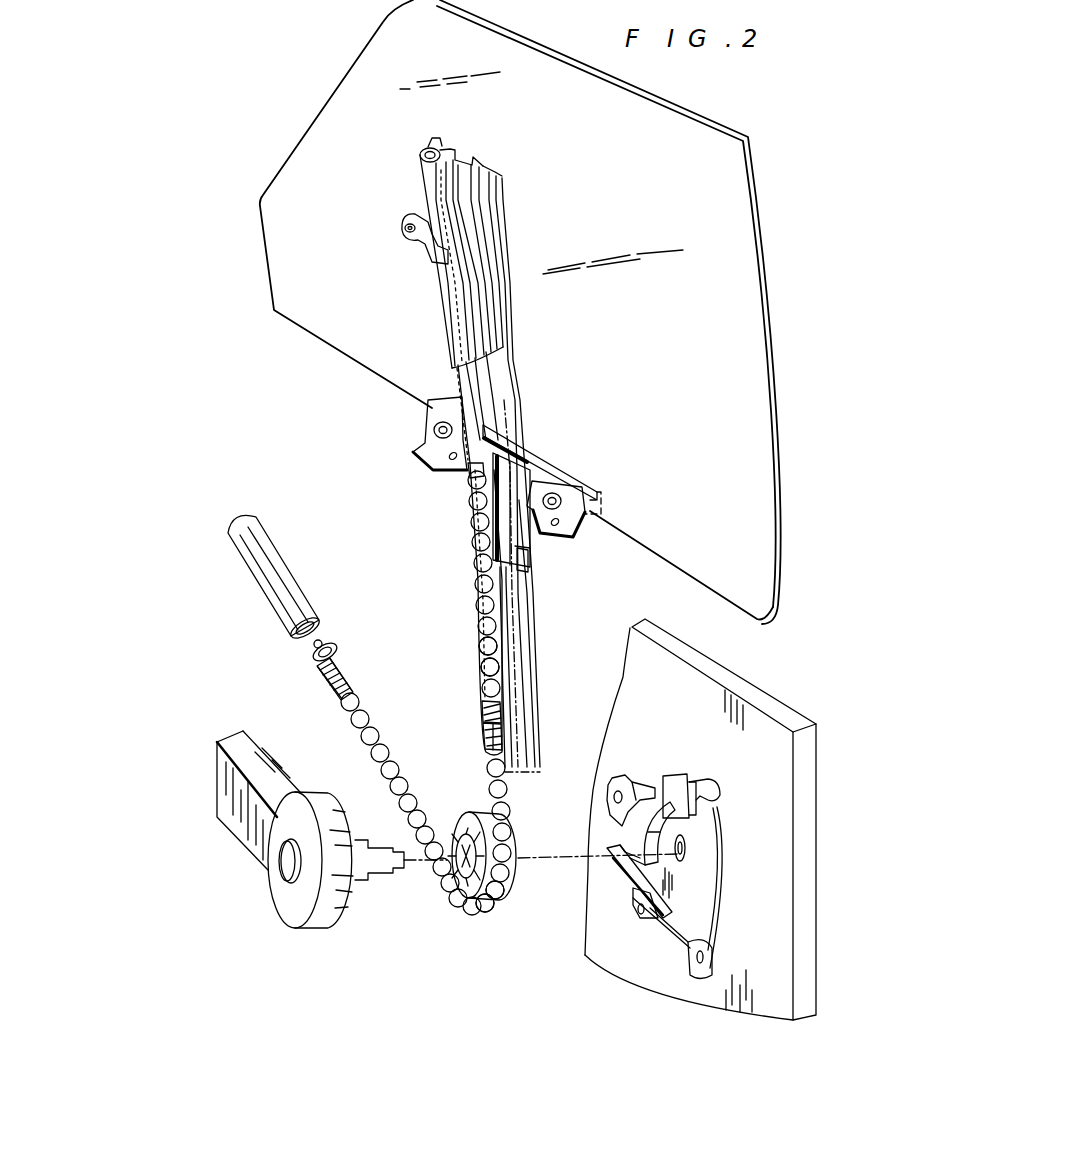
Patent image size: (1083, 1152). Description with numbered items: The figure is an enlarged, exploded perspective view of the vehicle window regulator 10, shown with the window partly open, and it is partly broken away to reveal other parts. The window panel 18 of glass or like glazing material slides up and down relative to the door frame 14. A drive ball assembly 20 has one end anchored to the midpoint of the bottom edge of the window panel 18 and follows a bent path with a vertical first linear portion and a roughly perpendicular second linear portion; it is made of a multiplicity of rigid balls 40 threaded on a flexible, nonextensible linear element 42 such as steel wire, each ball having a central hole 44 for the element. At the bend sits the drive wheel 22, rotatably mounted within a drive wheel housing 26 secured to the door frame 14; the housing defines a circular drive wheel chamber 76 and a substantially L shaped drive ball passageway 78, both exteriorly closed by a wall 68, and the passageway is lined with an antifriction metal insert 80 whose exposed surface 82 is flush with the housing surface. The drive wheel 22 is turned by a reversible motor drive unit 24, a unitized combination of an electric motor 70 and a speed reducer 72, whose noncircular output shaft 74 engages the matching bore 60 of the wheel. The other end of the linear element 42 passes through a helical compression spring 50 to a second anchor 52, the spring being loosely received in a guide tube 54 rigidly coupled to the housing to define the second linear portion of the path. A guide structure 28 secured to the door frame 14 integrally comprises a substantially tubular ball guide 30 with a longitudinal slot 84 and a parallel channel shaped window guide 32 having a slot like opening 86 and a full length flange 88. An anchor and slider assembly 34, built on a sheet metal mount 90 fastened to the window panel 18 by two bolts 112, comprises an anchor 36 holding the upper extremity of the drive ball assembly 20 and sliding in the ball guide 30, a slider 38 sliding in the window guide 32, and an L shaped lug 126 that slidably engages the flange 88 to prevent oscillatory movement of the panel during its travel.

The window regulator 10 is at (286, 406).
The door frame 14 is at (775, 740).
The window panel 18 is at (772, 462).
The drive ball assembly 20 is at (476, 619).
The drive wheel 22 is at (514, 834).
The motor drive unit 24 is at (222, 741).
The drive wheel housing 26 is at (696, 778).
The guide structure 28 is at (421, 148).
The ball guide 30 is at (438, 192).
The window guide 32 is at (485, 200).
The anchor and slider assembly 34 is at (548, 460).
The anchor 36 is at (467, 480).
The slider 38 is at (503, 488).
The balls 40 is at (484, 690).
The linear element 42 is at (484, 708).
The hole 44 is at (486, 735).
The compression spring 50 is at (350, 676).
The anchor 52 is at (333, 648).
The guide tube 54 is at (266, 548).
The bore 60 is at (455, 882).
The wall 68 is at (693, 875).
The electric motor 70 is at (228, 817).
The speed reducer 72 is at (283, 912).
The output shaft 74 is at (378, 873).
The drive wheel chamber 76 is at (668, 812).
The drive ball passageway 78 is at (690, 942).
The metal insert 80 is at (655, 925).
The exposed surface 82 is at (645, 893).
The slot 84 is at (443, 140).
The slot like opening 86 is at (464, 160).
The flange 88 is at (502, 238).
The mount 90 is at (430, 397).
The bolts 112 is at (436, 428).
The lug 126 is at (529, 560).